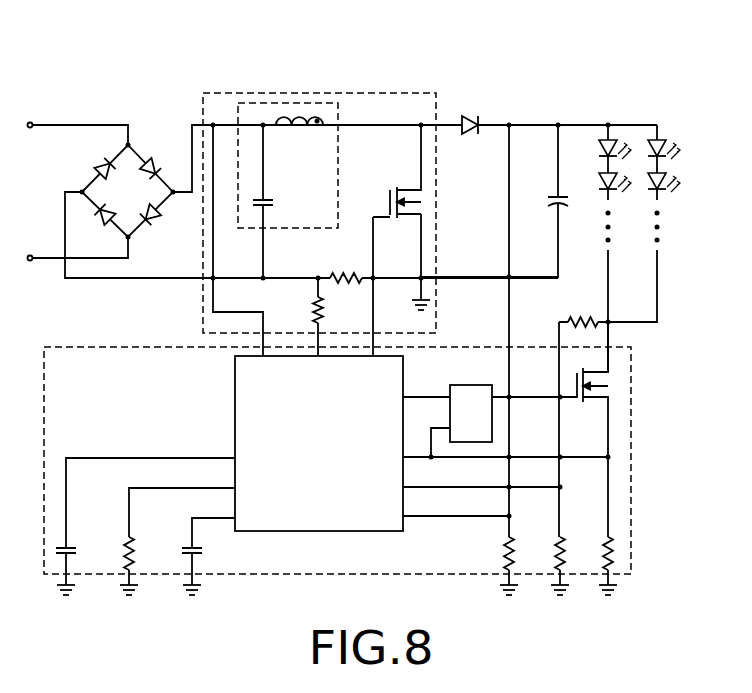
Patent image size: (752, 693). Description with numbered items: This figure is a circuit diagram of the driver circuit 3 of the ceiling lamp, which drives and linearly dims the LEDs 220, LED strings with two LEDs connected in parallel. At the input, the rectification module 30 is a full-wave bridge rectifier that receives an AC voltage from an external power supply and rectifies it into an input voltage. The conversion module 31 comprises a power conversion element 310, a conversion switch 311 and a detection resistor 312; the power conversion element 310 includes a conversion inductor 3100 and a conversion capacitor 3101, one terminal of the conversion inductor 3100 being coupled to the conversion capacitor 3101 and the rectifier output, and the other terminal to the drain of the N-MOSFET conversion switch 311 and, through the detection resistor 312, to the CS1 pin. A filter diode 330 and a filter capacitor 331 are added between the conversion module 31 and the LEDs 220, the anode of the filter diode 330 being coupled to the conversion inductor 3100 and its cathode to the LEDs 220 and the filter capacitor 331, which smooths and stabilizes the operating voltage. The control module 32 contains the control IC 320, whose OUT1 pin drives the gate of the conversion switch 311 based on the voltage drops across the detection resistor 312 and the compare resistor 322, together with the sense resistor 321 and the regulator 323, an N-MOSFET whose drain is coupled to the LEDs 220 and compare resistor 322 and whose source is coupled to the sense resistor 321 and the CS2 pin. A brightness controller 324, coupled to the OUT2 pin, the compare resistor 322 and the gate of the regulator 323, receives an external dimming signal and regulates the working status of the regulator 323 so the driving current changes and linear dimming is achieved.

The driver circuit 3 is at (679, 31).
The rectification module 30 is at (114, 157).
The conversion module 31 is at (198, 108).
The power conversion element 310 is at (342, 120).
The conversion inductor 3100 is at (298, 112).
The conversion capacitor 3101 is at (255, 197).
The conversion switch 311 is at (413, 187).
The detection resistor 312 is at (313, 303).
The filter diode 330 is at (473, 112).
The filter capacitor 331 is at (550, 195).
The LEDs 220 is at (610, 137).
The control module 32 is at (633, 358).
The control IC 320 is at (235, 383).
The sense resistor 321 is at (567, 535).
The compare resistor 322 is at (615, 563).
The regulator 323 is at (592, 400).
The brightness controller 324 is at (492, 428).